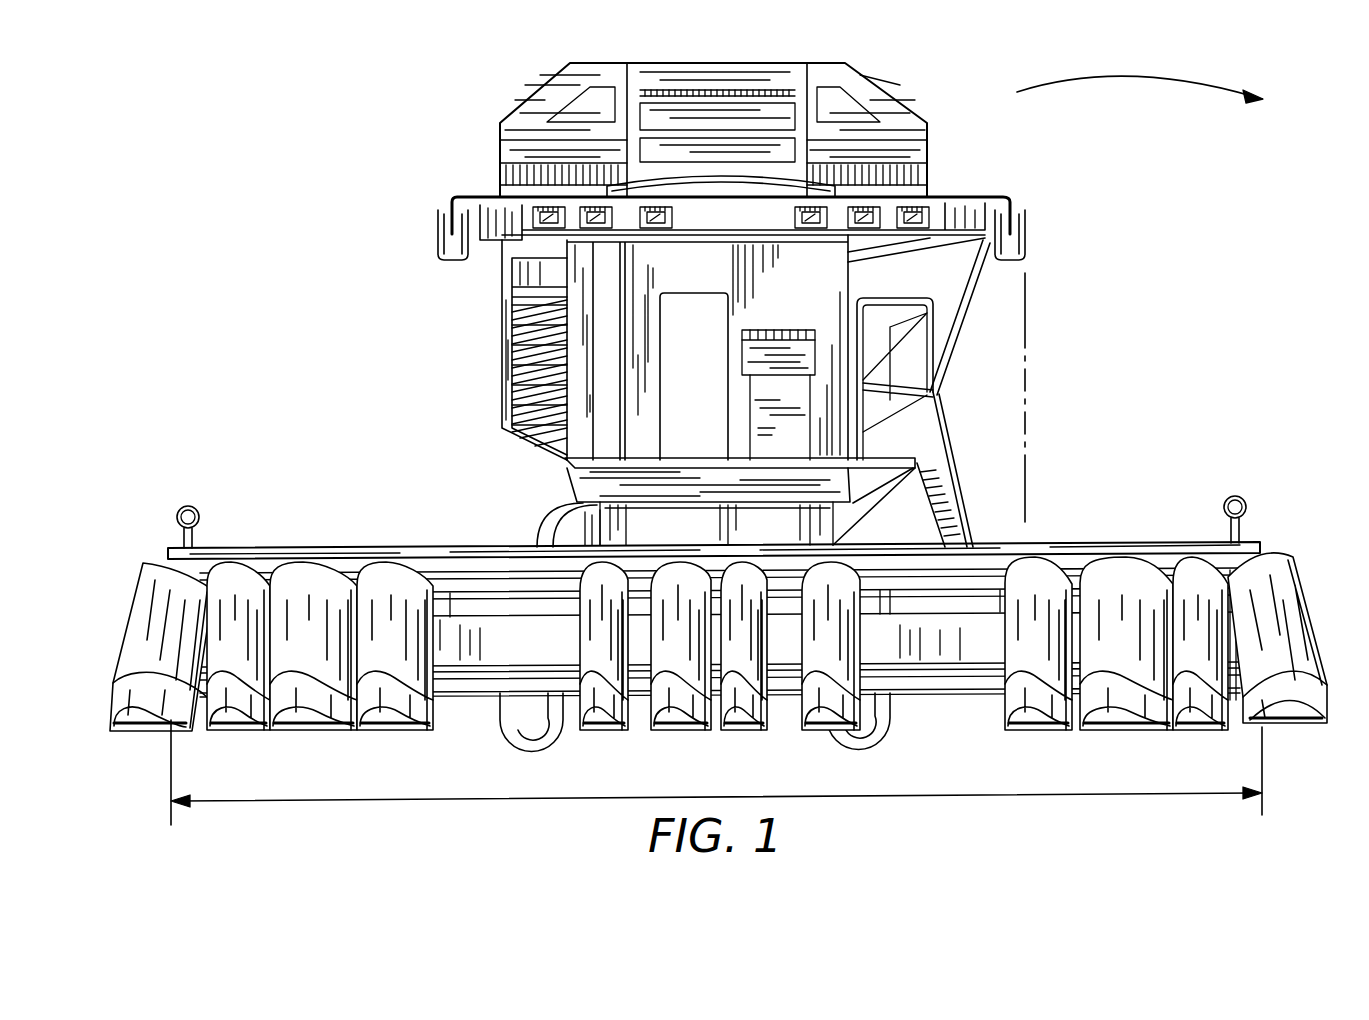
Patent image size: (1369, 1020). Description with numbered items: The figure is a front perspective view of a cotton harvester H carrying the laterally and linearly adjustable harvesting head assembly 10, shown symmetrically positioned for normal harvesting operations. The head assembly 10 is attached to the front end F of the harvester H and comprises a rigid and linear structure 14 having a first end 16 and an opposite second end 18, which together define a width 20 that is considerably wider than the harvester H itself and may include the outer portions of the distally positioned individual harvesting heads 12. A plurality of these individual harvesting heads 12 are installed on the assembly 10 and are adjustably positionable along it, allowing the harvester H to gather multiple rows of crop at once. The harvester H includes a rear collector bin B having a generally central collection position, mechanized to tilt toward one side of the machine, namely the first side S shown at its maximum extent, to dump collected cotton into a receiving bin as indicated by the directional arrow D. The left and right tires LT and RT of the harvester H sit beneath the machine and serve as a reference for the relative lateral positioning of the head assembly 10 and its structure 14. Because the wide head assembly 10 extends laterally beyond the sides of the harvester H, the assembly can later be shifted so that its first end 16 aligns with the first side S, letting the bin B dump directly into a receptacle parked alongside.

The harvesting head assembly 10 is at (378, 487).
The individual harvesting heads 12 is at (343, 728).
The rigid and linear structure 14 is at (973, 697).
The first end 16 is at (1262, 550).
The second end 18 is at (168, 553).
The width 20 is at (873, 797).
The rear collector bin B is at (502, 378).
The directional arrow D is at (1140, 78).
The front end F is at (676, 533).
The harvester H is at (1112, 292).
The first side S is at (1025, 372).
The left tire LT is at (830, 738).
The right tire RT is at (507, 745).